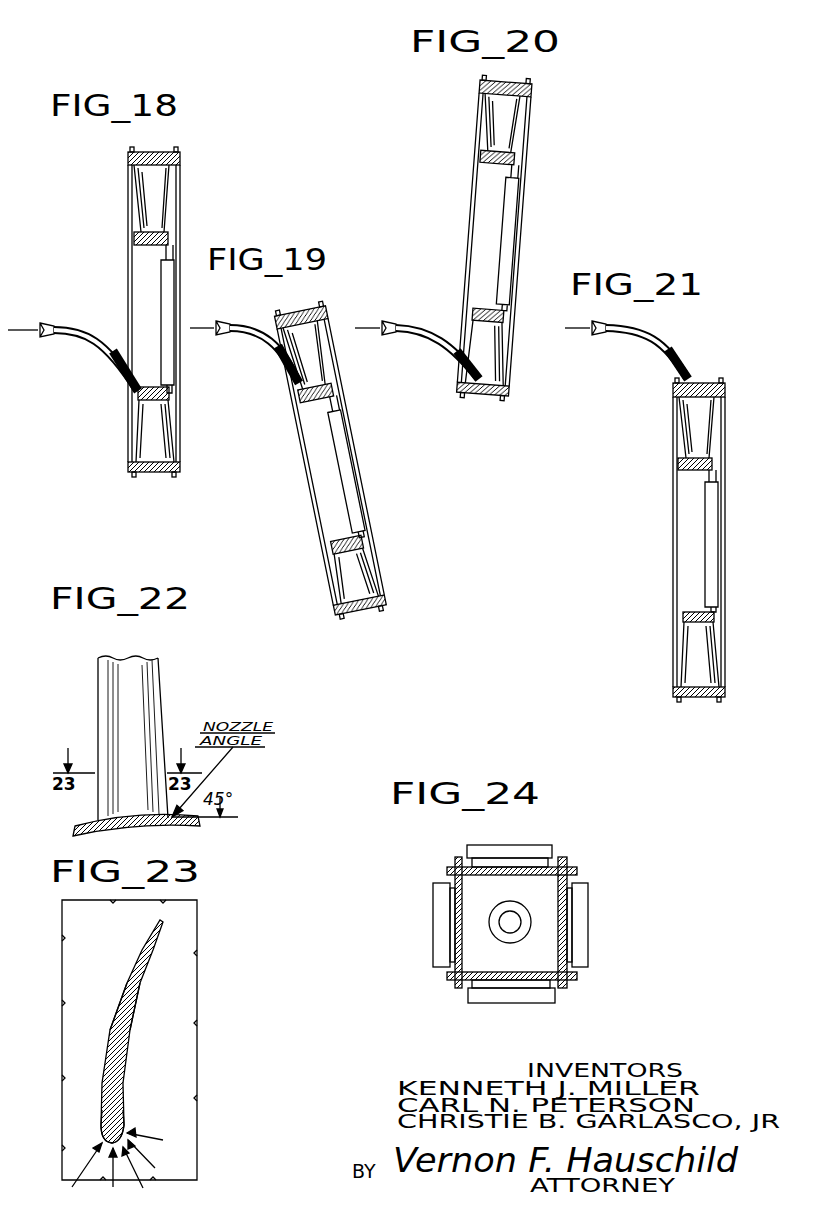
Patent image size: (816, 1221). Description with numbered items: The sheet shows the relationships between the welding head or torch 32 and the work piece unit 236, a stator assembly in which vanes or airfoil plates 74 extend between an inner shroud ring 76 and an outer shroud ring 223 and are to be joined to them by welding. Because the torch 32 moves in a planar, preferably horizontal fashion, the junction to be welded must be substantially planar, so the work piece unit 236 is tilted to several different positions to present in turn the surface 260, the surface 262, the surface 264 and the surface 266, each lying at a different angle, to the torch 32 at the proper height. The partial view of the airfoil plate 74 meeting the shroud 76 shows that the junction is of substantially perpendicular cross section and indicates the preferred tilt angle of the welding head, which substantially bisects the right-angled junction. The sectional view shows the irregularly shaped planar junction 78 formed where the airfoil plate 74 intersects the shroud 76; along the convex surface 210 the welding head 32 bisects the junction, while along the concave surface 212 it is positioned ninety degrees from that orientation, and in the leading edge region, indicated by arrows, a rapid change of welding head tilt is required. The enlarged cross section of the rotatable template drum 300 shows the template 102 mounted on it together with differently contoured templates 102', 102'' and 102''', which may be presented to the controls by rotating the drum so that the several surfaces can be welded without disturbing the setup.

In FIG. 18, the welding head 32 is at (94, 298).
In FIG. 19, the welding head 32 is at (249, 322).
In FIG. 20, the welding head 32 is at (432, 327).
In FIG. 21, the welding head 32 is at (654, 328).
In FIG. 18, the airfoil plate 74 is at (143, 205).
In FIG. 19, the airfoil plate 74 is at (320, 359).
In FIG. 20, the airfoil plate 74 is at (497, 118).
In FIG. 21, the airfoil plate 74 is at (692, 427).
In FIG. 22, the airfoil plate 74 is at (162, 688).
In FIG. 23, the airfoil plate 74 is at (131, 994).
In FIG. 18, the shroud 76 is at (146, 250).
In FIG. 22, the shroud 76 is at (82, 826).
In FIG. 23, the shroud 76 is at (182, 985).
In FIG. 23, the planar junction 78 is at (126, 1078).
In FIG. 23, the convex surface 210 is at (115, 1028).
In FIG. 23, the concave surface 212 is at (130, 1037).
In FIG. 18, the outer shroud ring 223 is at (151, 158).
In FIG. 19, the outer shroud ring 223 is at (300, 312).
In FIG. 20, the outer shroud ring 223 is at (521, 84).
In FIG. 21, the outer shroud ring 223 is at (712, 697).
In FIG. 18, the work piece unit 236 is at (179, 202).
In FIG. 19, the work piece unit 236 is at (358, 453).
In FIG. 20, the work piece unit 236 is at (534, 146).
In FIG. 21, the work piece unit 236 is at (725, 443).
In FIG. 18, the surface 260 is at (137, 396).
In FIG. 19, the surface 262 is at (326, 383).
In FIG. 20, the surface 264 is at (494, 379).
In FIG. 21, the surface 266 is at (702, 383).
In FIG. 24, the template drum 300 is at (580, 868).
In FIG. 24, the template 102 is at (513, 841).
In FIG. 24, the template 102' is at (410, 925).
In FIG. 24, the template 102'' is at (515, 1011).
In FIG. 24, the template 102''' is at (623, 925).